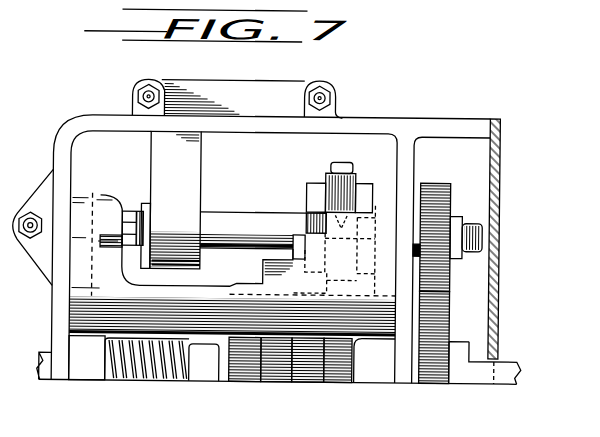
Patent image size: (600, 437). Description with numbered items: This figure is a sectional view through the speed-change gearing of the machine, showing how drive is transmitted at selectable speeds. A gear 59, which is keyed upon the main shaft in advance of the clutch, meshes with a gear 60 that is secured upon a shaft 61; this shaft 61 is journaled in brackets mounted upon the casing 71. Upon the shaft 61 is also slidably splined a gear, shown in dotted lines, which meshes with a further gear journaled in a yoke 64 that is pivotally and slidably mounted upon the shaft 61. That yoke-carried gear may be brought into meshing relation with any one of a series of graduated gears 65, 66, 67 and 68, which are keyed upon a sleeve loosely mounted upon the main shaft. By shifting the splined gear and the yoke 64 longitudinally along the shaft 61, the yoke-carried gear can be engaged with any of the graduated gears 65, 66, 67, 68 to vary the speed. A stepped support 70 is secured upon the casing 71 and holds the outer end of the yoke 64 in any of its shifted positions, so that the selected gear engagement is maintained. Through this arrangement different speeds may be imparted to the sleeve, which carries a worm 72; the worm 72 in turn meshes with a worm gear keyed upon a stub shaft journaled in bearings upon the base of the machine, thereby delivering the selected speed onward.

The gear 59 is at (448, 318).
The gear 60 is at (453, 195).
The shaft 61 is at (231, 218).
The yoke 64 is at (306, 195).
The graduated gear 65 is at (335, 375).
The graduated gear 66 is at (313, 373).
The graduated gear 67 is at (283, 368).
The graduated gear 68 is at (248, 370).
The stepped support 70 is at (200, 300).
The casing 71 is at (396, 133).
The worm 72 is at (134, 382).